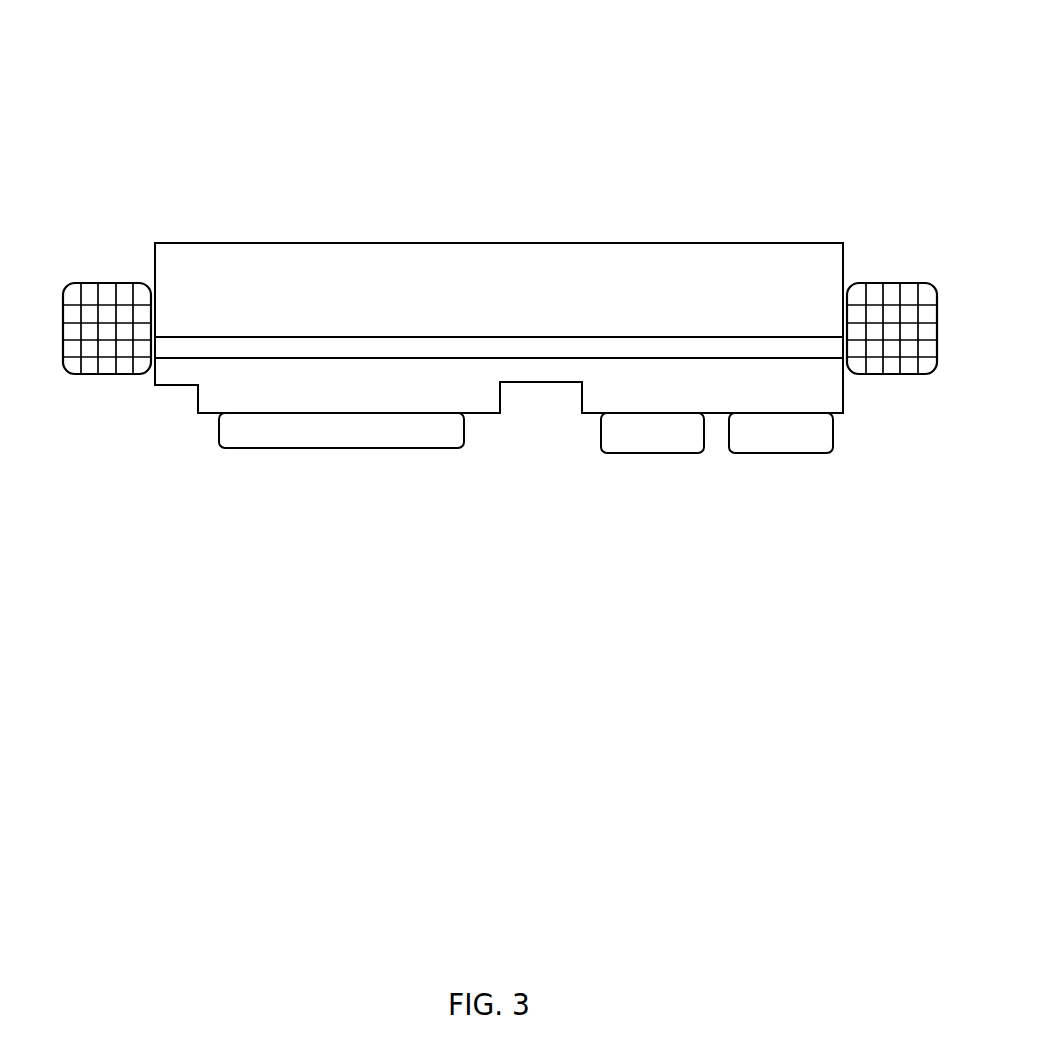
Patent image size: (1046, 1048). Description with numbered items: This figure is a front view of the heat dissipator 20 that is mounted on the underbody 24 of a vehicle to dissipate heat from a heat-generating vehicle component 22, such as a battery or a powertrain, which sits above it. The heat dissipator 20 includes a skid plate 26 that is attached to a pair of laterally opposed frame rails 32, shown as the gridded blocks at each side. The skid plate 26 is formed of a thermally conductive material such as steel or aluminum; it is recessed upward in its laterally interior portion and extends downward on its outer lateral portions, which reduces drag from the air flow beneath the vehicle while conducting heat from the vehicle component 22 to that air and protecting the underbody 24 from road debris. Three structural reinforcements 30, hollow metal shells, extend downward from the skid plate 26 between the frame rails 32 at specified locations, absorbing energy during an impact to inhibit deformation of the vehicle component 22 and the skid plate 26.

The heat dissipator 20 is at (684, 74).
The vehicle component 22 is at (253, 254).
The underbody 24 is at (140, 456).
The skid plate 26 is at (213, 402).
The structural reinforcement 30 is at (364, 439).
The frame rail 32 is at (88, 312).